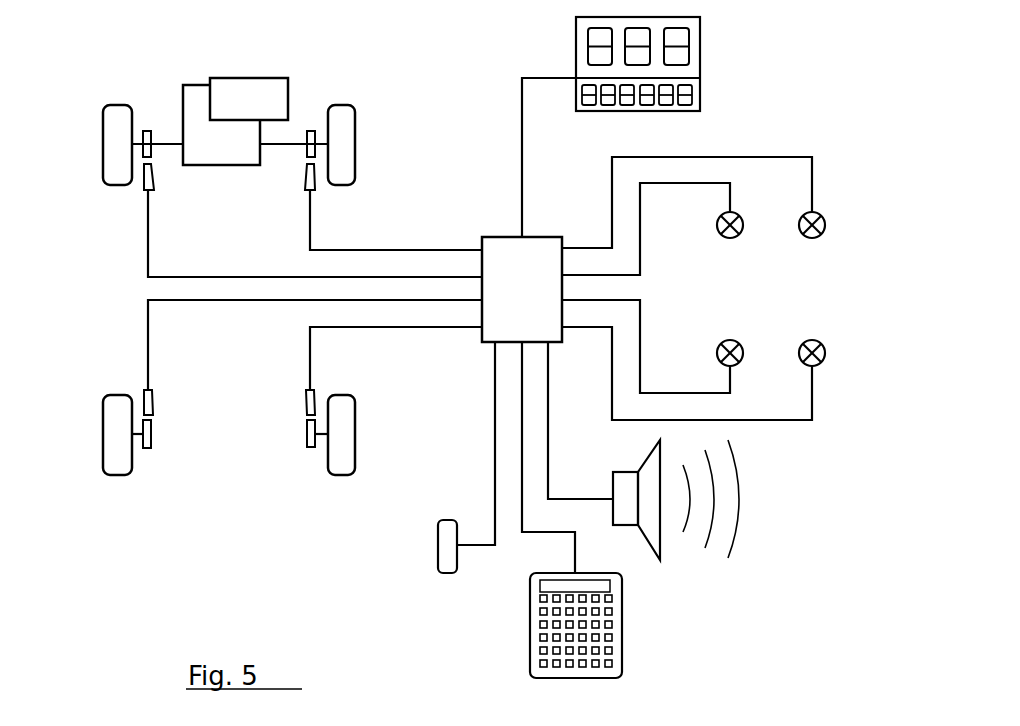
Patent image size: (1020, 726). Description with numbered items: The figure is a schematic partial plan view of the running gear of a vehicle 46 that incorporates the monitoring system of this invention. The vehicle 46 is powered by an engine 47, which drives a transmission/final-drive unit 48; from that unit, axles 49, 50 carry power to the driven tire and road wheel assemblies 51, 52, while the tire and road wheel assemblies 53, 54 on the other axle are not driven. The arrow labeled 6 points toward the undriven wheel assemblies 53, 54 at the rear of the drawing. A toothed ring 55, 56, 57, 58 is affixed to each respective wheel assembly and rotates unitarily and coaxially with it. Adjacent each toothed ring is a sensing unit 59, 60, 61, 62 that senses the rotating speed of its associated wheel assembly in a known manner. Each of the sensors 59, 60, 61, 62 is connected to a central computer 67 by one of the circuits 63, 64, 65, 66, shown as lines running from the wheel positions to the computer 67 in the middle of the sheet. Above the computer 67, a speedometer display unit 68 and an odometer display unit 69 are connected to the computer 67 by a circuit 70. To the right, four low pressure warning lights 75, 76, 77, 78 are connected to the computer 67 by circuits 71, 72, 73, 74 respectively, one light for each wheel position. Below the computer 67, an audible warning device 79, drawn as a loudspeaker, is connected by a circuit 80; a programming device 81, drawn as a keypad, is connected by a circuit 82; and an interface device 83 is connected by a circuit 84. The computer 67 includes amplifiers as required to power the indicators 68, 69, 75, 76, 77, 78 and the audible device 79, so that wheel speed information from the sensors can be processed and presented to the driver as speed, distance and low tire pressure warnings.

The rear axle assembly 6 is at (285, 421).
The vehicle 46 is at (172, 522).
The engine 47 is at (242, 85).
The transmission/final-drive unit 48 is at (197, 92).
The axle 49 is at (168, 140).
The axle 50 is at (295, 140).
The tire and road wheel assembly 51 is at (110, 160).
The tire and road wheel assembly 52 is at (345, 160).
The tire and road wheel assembly 53 is at (110, 430).
The tire and road wheel assembly 54 is at (345, 416).
The toothed ring 55 is at (146, 130).
The toothed ring 56 is at (312, 130).
The toothed ring 57 is at (145, 450).
The toothed ring 58 is at (311, 448).
The sensing unit 59 is at (143, 185).
The sensing unit 60 is at (315, 183).
The sensing unit 61 is at (143, 393).
The sensing unit 62 is at (315, 394).
The circuit 63 is at (148, 236).
The circuit 64 is at (447, 250).
The circuit 65 is at (148, 346).
The circuit 66 is at (455, 330).
The computer 67 is at (505, 247).
The speedometer display unit 68 is at (693, 58).
The odometer display unit 69 is at (697, 100).
The circuit 70 is at (522, 76).
The circuit 71 is at (730, 198).
The circuit 72 is at (812, 176).
The circuit 73 is at (731, 380).
The circuit 74 is at (813, 402).
The low pressure warning light 75 is at (717, 226).
The low pressure warning light 76 is at (825, 225).
The low pressure warning light 77 is at (717, 352).
The low pressure warning light 78 is at (825, 352).
The audible warning device 79 is at (657, 532).
The circuit 80 is at (570, 500).
The programming device 81 is at (614, 612).
The circuit 82 is at (528, 535).
The interface device 83 is at (438, 553).
The circuit 84 is at (494, 548).